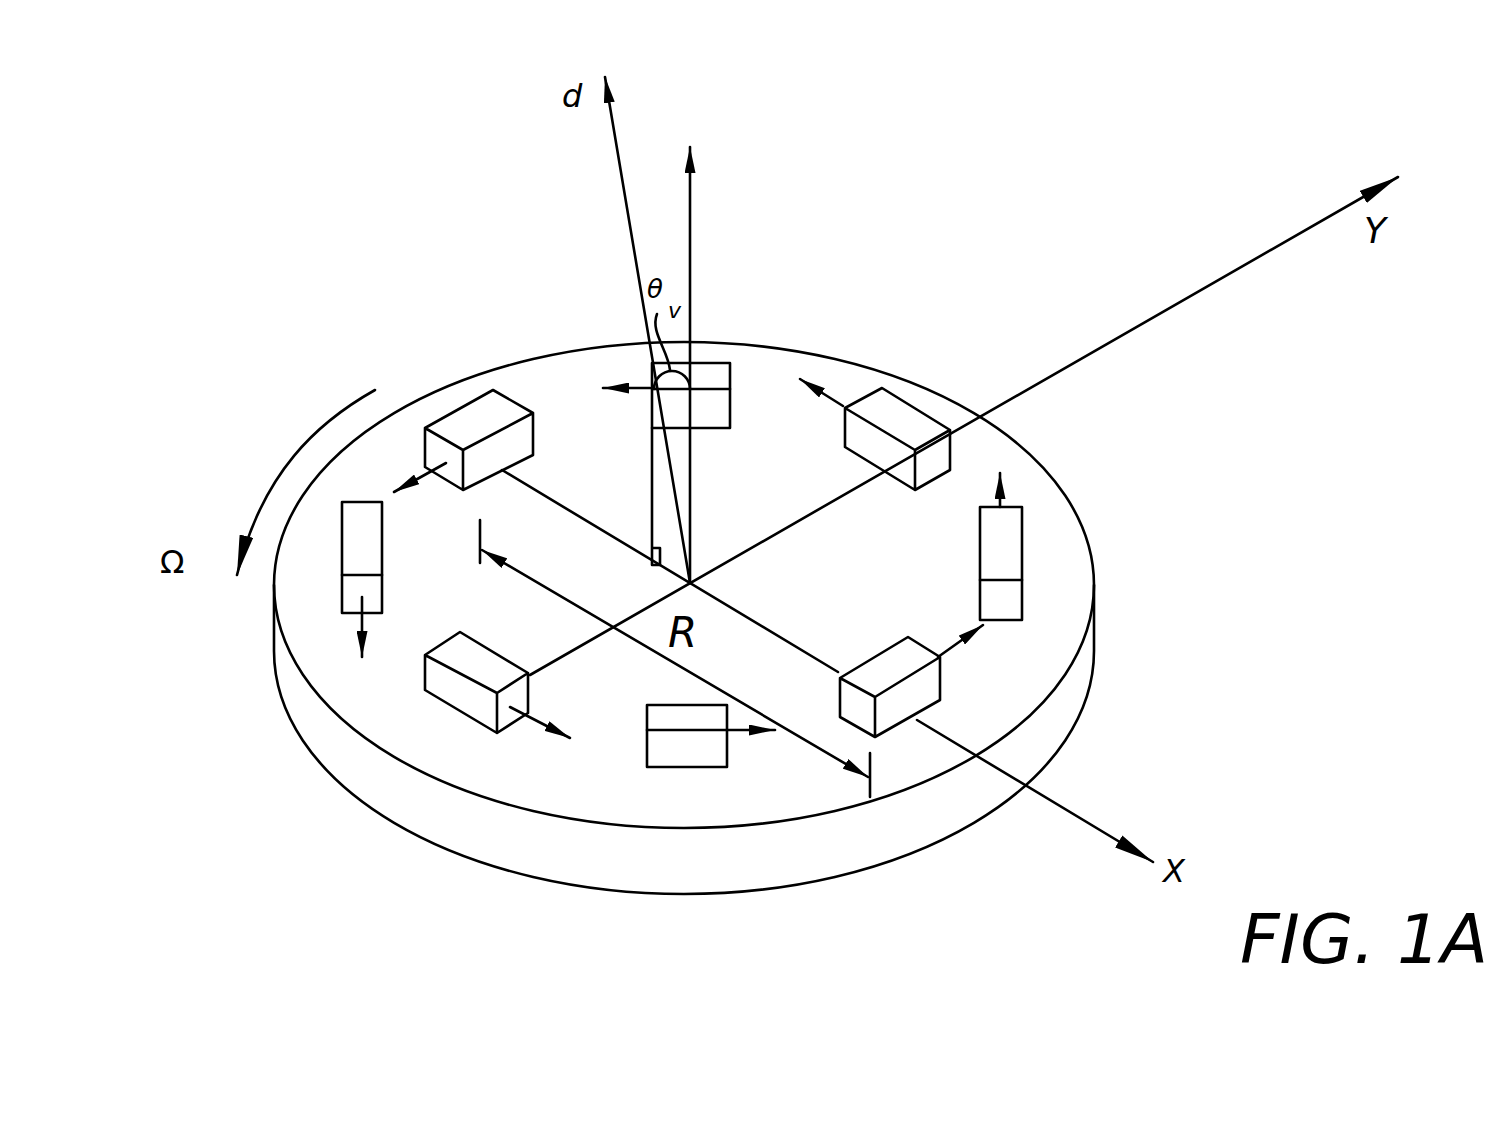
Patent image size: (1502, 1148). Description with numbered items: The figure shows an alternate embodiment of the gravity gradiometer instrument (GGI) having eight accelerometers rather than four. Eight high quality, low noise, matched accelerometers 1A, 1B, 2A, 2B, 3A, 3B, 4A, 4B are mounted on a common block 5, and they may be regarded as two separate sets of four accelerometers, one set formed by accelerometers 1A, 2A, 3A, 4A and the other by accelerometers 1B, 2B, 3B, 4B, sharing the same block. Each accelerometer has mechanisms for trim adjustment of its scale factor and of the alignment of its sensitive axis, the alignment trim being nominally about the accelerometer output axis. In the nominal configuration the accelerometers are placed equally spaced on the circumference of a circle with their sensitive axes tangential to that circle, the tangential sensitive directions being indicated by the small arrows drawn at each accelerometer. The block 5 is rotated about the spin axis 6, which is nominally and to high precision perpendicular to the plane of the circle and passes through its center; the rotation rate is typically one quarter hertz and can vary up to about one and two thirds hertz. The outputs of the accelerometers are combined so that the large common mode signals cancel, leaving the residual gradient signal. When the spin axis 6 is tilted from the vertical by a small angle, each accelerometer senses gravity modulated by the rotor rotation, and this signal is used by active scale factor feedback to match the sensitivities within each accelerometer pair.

The accelerometer 1A is at (887, 677).
The accelerometer 1B is at (1017, 537).
The accelerometer 2A is at (477, 428).
The accelerometer 2B is at (354, 543).
The accelerometer 3A is at (902, 427).
The accelerometer 3B is at (707, 376).
The accelerometer 4A is at (476, 663).
The accelerometer 4B is at (710, 753).
The block 5 is at (566, 870).
The spin axis 6 is at (692, 345).